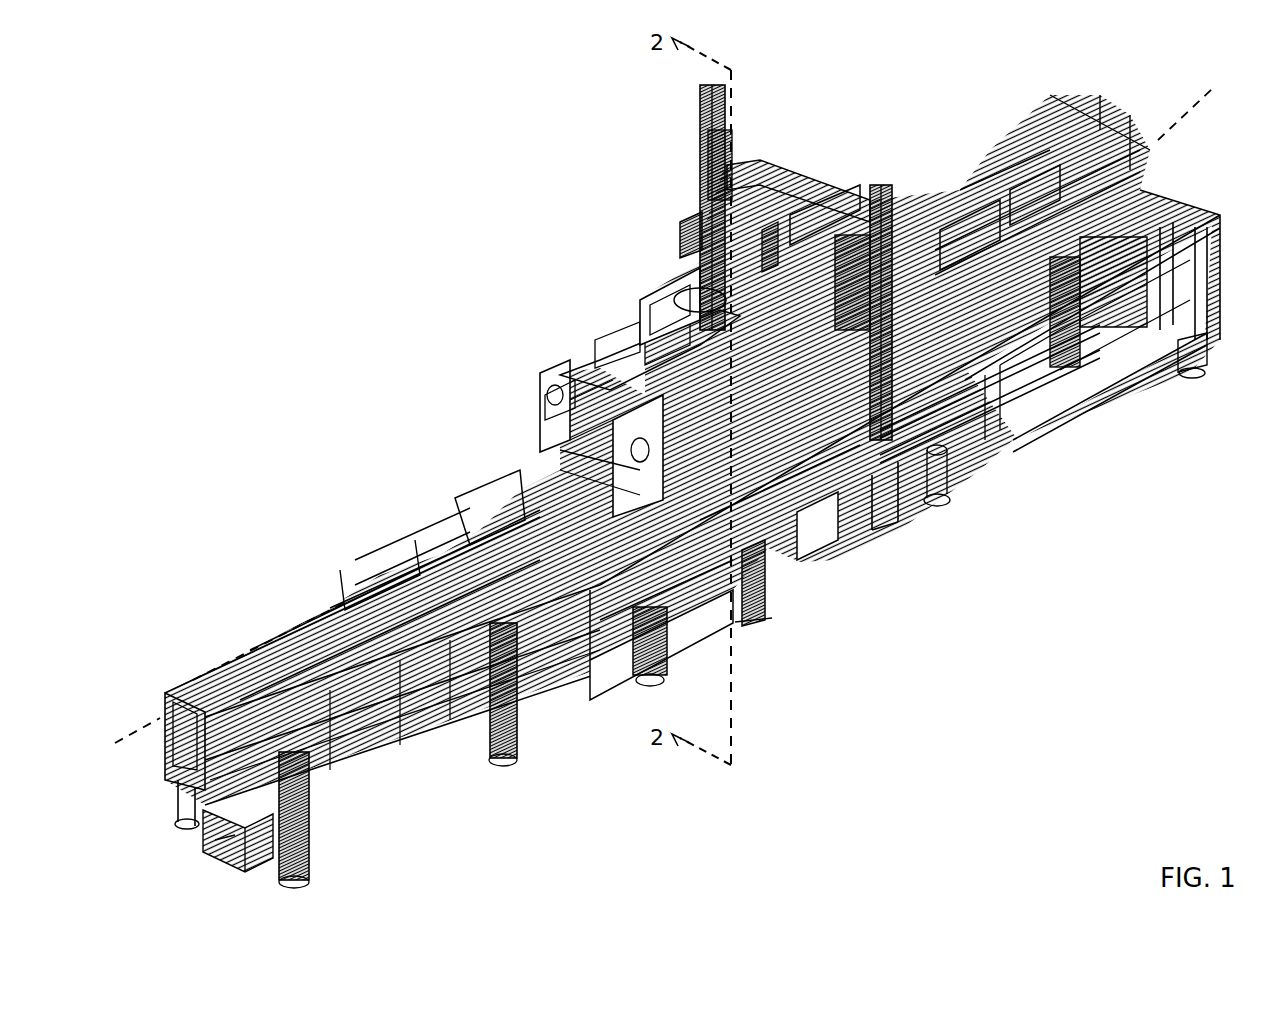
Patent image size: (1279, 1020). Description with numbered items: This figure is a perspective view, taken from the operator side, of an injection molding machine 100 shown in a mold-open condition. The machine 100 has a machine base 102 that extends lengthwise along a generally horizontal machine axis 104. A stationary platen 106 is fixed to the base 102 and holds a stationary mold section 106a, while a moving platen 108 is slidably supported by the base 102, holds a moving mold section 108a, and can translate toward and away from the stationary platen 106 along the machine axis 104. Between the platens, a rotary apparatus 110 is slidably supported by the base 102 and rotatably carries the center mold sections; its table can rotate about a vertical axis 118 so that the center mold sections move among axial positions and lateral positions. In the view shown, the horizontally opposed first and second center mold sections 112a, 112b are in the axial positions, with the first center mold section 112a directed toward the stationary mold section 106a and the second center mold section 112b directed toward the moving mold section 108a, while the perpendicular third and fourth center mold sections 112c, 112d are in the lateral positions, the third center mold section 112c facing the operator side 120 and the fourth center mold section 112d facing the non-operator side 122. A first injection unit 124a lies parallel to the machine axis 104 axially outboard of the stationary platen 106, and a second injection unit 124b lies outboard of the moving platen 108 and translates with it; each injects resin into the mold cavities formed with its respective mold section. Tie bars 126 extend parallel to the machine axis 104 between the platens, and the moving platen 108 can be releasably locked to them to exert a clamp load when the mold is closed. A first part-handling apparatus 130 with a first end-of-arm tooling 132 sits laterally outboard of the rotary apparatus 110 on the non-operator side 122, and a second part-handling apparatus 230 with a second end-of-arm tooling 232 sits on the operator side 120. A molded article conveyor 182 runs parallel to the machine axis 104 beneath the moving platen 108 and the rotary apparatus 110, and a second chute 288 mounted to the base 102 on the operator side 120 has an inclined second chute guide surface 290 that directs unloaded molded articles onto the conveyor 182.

The injection molding machine 100 is at (345, 238).
The machine base 102 is at (547, 745).
The machine axis 104 is at (1213, 100).
The stationary platen 106 is at (850, 278).
The stationary mold section 106a is at (808, 222).
The moving platen 108 is at (560, 430).
The moving mold section 108a is at (545, 400).
The rotary apparatus 110 is at (742, 562).
The first center mold section 112a is at (771, 250).
The second center mold section 112b is at (605, 345).
The third center mold section 112c is at (783, 555).
The fourth center mold section 112d is at (650, 345).
The vertical axis 118 is at (735, 100).
The operator side 120 is at (342, 892).
The non-operator side 122 is at (107, 722).
The first injection unit 124a is at (967, 236).
The second injection unit 124b is at (470, 500).
The tie bars 126 is at (600, 374).
The first part-handling apparatus 130 is at (660, 200).
The first end-of-arm tooling 132 is at (638, 277).
The molded article conveyor 182 is at (203, 832).
The second part-handling apparatus 230 is at (976, 372).
The second end-of-arm tooling 232 is at (962, 412).
The second chute 288 is at (860, 540).
The second chute guide surface 290 is at (850, 545).